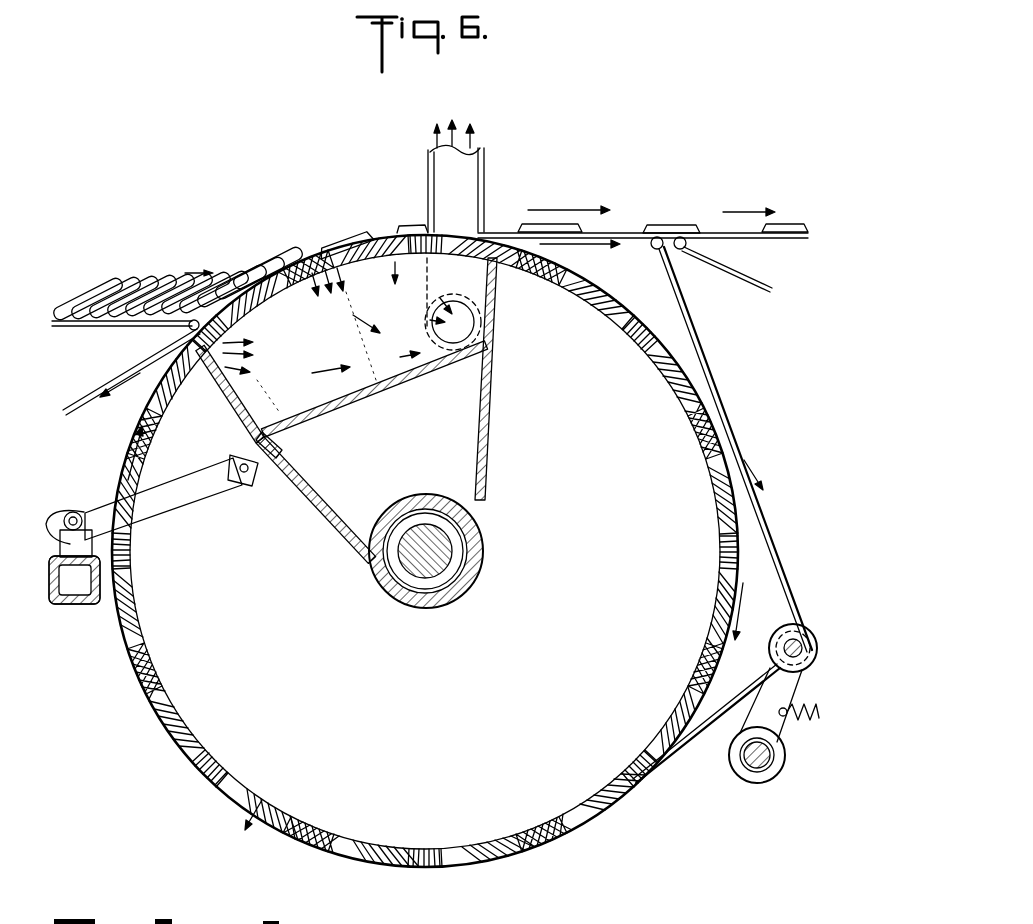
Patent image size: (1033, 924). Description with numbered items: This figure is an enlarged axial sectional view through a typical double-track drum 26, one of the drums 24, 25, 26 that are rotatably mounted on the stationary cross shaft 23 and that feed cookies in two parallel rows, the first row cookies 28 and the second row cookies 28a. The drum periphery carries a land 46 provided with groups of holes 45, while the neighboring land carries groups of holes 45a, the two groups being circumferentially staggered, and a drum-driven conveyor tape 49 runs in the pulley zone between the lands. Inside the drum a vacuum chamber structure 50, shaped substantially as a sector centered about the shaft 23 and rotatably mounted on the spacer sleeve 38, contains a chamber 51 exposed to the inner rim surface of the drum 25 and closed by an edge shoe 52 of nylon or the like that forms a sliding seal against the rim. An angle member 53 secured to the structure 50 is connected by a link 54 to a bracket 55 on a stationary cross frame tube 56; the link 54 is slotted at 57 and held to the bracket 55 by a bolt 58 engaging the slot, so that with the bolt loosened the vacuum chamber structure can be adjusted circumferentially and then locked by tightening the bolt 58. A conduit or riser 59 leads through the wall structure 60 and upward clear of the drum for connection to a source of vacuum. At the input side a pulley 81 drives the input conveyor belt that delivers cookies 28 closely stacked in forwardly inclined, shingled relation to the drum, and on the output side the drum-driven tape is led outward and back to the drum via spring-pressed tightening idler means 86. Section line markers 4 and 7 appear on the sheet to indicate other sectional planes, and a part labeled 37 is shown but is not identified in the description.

The section line 4 is at (392, 93).
The section line 7 is at (452, 880).
The stationary cross shaft 23 is at (428, 504).
The drum 24 is at (152, 718).
The drum 25 is at (425, 551).
The drum 26 is at (425, 551).
The product articles 28 is at (132, 290).
The second row cookies 28a is at (328, 240).
The belt roller 37 is at (600, 792).
The spacer sleeve 38 is at (416, 600).
The holes 45 is at (410, 268).
The holes 45a is at (296, 290).
The land 46 is at (286, 258).
The tape 49 is at (498, 232).
The vacuum chamber structure 50 is at (494, 356).
The chamber 51 is at (238, 410).
The edge shoe 52 is at (502, 282).
The angle member 53 is at (252, 484).
The link 54 is at (192, 476).
The bracket 55 is at (60, 576).
The cross frame tube 56 is at (76, 602).
The slot 57 is at (80, 510).
The bolt 58 is at (72, 520).
The conduit or riser 59 is at (484, 160).
The wall structure 60 is at (339, 355).
The pulley 81 is at (102, 326).
The spring-pressed tightening idler means 86 is at (776, 630).